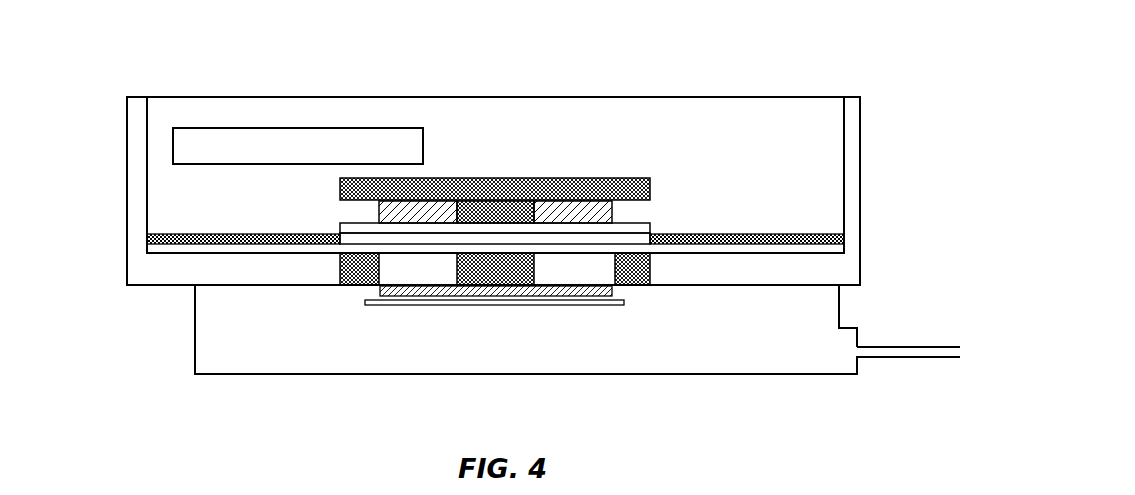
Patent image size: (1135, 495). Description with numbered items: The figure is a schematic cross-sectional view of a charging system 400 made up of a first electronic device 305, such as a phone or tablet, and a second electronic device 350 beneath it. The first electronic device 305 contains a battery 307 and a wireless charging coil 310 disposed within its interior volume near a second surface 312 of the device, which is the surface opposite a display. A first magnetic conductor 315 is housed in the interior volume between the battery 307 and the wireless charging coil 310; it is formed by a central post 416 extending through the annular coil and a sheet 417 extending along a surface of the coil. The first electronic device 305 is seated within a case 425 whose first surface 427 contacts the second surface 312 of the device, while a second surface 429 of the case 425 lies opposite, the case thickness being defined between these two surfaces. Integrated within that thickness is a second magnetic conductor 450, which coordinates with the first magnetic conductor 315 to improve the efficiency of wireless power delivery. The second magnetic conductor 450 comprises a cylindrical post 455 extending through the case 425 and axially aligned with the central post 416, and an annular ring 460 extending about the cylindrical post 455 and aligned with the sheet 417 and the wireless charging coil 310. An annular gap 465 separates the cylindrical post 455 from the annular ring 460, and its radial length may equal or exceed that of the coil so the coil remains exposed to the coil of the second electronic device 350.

The charging system 400 is at (104, 92).
The first electronic device 305 is at (700, 97).
The case 425 is at (861, 193).
The battery 307 is at (205, 127).
The sheet 417 is at (438, 178).
The first magnetic conductor 315 is at (613, 178).
The central post 416 is at (515, 203).
The wireless charging coil 310 is at (650, 225).
The first surface 427 is at (263, 257).
The second surface 312 is at (182, 257).
The second surface 429 is at (295, 285).
The annular ring 460 is at (652, 272).
The second magnetic conductor 450 is at (637, 287).
The annular gap 465 is at (382, 302).
The cylindrical post 455 is at (535, 272).
The second electronic device 350 is at (233, 377).